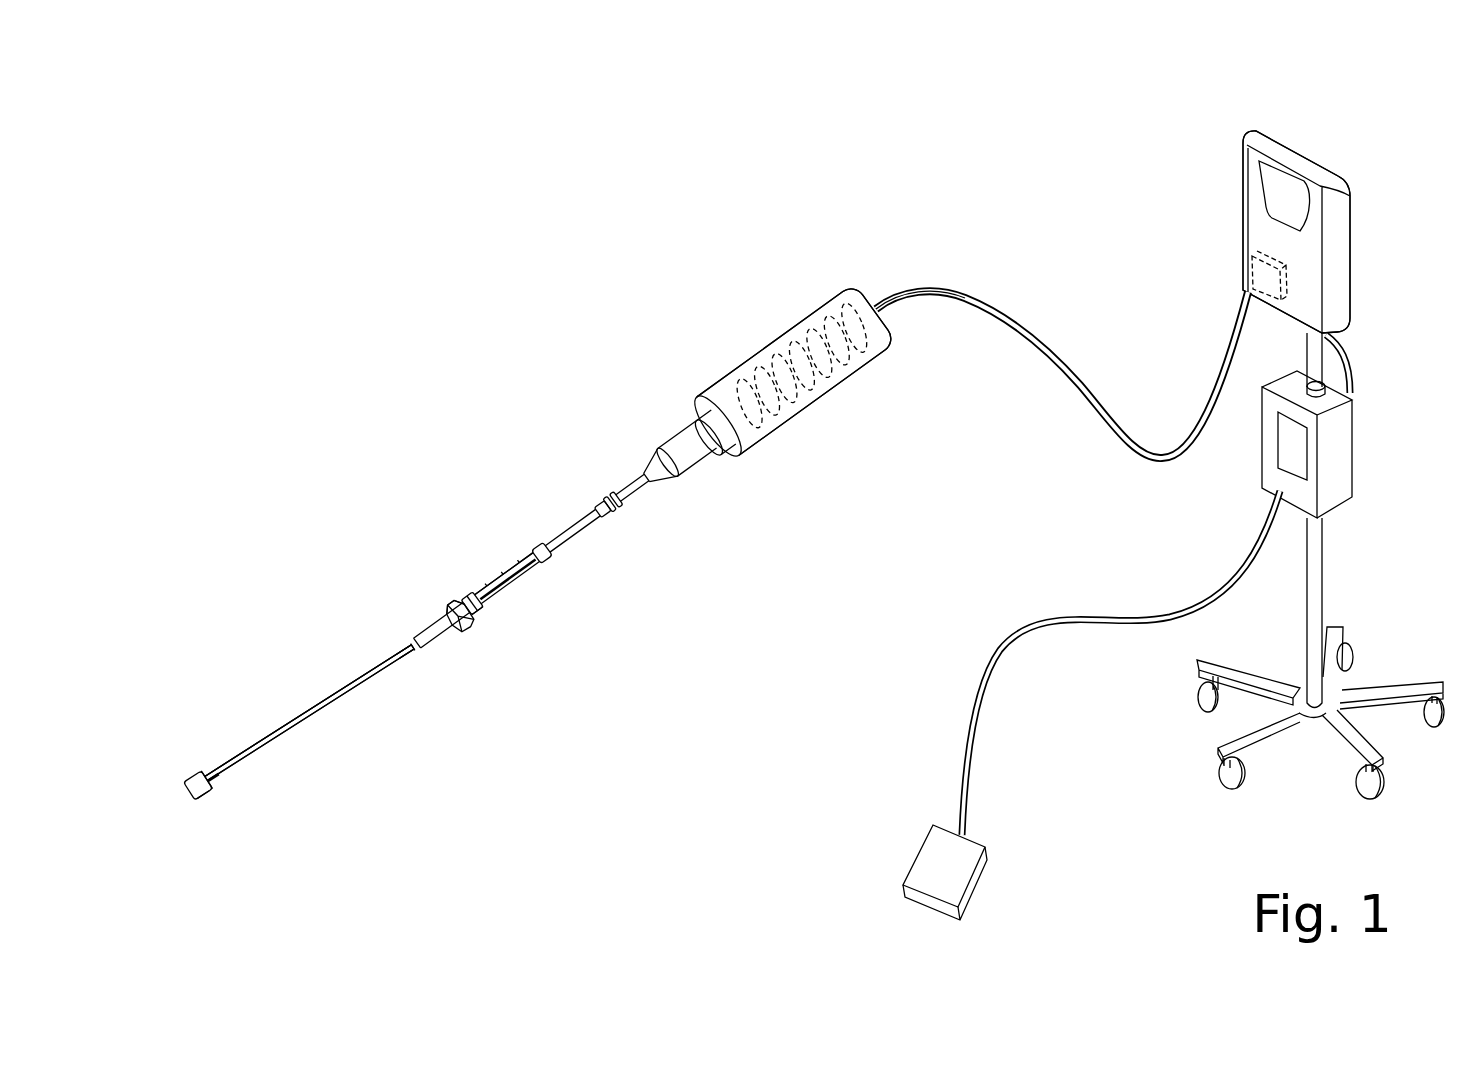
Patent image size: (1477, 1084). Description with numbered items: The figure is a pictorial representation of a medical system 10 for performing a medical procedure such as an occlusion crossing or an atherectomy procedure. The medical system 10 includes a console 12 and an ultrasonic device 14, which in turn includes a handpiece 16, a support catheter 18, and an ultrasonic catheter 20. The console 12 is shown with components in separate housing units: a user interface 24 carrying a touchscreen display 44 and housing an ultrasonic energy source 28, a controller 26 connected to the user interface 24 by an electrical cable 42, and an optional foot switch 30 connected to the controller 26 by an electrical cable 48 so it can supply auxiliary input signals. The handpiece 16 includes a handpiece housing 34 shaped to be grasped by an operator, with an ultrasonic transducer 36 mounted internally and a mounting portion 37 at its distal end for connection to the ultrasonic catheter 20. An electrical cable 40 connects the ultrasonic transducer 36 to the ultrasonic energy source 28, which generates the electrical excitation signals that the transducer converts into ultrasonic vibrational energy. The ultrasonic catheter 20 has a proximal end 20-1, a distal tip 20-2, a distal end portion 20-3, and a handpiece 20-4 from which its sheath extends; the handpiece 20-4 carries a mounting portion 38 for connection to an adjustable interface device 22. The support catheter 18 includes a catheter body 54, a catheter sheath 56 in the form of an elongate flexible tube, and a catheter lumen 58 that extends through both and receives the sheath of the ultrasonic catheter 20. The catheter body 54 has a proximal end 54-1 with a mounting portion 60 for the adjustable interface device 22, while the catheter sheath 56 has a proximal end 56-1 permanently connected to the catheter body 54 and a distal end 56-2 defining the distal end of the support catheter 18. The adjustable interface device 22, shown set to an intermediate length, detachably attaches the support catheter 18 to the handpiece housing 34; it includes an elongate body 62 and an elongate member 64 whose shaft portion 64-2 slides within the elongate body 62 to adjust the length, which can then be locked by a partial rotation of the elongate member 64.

The medical system 10 is at (432, 232).
The console 12 is at (1170, 180).
The ultrasonic device 14 is at (945, 252).
The handpiece 16 is at (750, 310).
The support catheter 18 is at (433, 598).
The ultrasonic catheter 20 is at (670, 418).
The proximal end 20-1 is at (710, 437).
The distal tip 20-2 is at (196, 797).
The distal end portion 20-3 is at (192, 773).
The handpiece 20-4 is at (660, 450).
The adjustable interface device 22 is at (490, 497).
The user interface 24 is at (1350, 247).
The controller 26 is at (1352, 395).
The ultrasonic energy source 28 is at (1252, 268).
The foot switch 30 is at (980, 882).
The handpiece housing 34 is at (793, 323).
The ultrasonic transducer 36 is at (800, 400).
The mounting portion 37 is at (717, 443).
The mounting portion 38 is at (610, 497).
The electrical cable 40 is at (1050, 348).
The electrical cable 42 is at (1365, 345).
The touchscreen display 44 is at (1262, 168).
The electrical cable 48 is at (987, 683).
The catheter body 54 is at (449, 630).
The proximal end 54-1 is at (460, 598).
The catheter sheath 56 is at (323, 715).
The proximal end 56-1 is at (423, 618).
The distal end 56-2 is at (213, 775).
The catheter lumen 58 is at (210, 808).
The mounting portion 60 is at (470, 617).
The elongate body 62 is at (532, 596).
The elongate member 64 is at (563, 522).
The shaft portion 64-2 is at (570, 540).